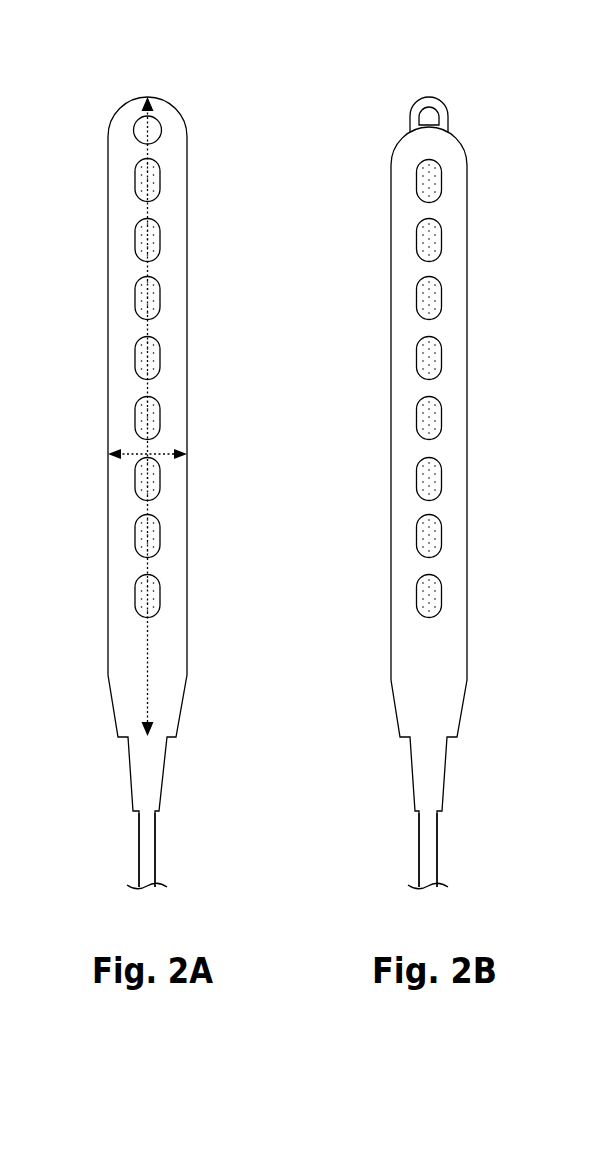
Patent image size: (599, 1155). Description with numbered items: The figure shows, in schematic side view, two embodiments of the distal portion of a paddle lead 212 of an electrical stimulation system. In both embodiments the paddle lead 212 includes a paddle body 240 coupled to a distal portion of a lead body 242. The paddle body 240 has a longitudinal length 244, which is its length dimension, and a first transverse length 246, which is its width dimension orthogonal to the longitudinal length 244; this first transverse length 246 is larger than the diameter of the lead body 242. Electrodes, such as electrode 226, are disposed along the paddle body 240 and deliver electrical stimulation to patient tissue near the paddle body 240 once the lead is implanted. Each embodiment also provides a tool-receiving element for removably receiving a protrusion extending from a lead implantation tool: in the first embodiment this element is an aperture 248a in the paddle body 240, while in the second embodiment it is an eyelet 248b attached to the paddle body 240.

In FIG. 2A, the paddle lead 212 is at (201, 88).
In FIG. 2B, the paddle lead 212 is at (483, 88).
In FIG. 2A, the paddle body 240 is at (118, 337).
In FIG. 2B, the paddle body 240 is at (400, 337).
In FIG. 2A, the lead body 242 is at (150, 848).
In FIG. 2B, the lead body 242 is at (432, 848).
In FIG. 2A, the longitudinal length 244 is at (146, 652).
In FIG. 2A, the first transverse length 246 is at (133, 454).
In FIG. 2A, the electrode 226 is at (145, 537).
In FIG. 2B, the electrode 226 is at (425, 537).
In FIG. 2A, the aperture 248a is at (140, 130).
In FIG. 2B, the eyelet 248b is at (414, 112).